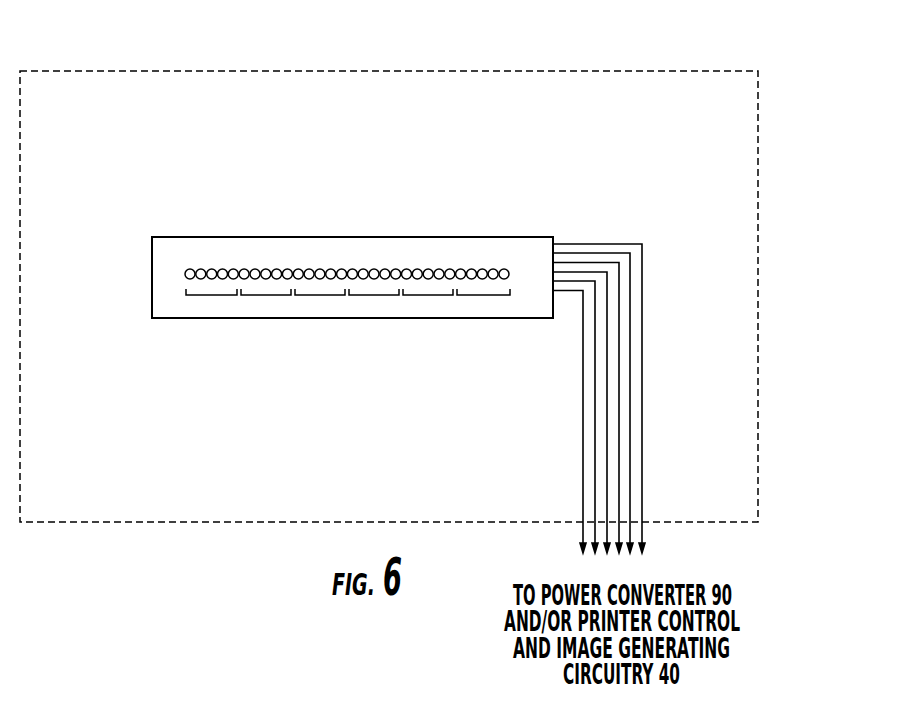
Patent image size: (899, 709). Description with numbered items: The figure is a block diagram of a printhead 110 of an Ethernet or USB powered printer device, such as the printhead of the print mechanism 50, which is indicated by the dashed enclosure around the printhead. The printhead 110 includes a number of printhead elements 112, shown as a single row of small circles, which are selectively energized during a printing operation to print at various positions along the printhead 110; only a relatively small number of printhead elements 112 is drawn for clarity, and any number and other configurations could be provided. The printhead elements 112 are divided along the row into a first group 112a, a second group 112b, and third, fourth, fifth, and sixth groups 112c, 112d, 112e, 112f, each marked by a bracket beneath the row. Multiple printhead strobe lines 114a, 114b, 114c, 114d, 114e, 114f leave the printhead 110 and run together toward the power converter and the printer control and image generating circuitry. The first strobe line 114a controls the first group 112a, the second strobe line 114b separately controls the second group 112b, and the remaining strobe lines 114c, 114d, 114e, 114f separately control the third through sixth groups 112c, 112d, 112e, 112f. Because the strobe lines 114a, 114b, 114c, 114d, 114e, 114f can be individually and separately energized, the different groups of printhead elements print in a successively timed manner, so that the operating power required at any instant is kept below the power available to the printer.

The print mechanism 50 is at (760, 211).
The printhead 110 is at (420, 230).
The printhead elements 112 is at (170, 264).
The first group of printhead elements 112a is at (213, 298).
The second group of printhead elements 112b is at (267, 298).
The third group of printhead elements 112c is at (321, 298).
The fourth group of printhead elements 112d is at (377, 298).
The fifth group of printhead elements 112e is at (431, 298).
The sixth group of printhead elements 112f is at (485, 298).
The first strobe line 114a is at (583, 417).
The second strobe line 114b is at (595, 452).
The third strobe line 114c is at (607, 477).
The fourth strobe line 114d is at (619, 355).
The fifth strobe line 114e is at (630, 384).
The sixth strobe line 114f is at (642, 426).